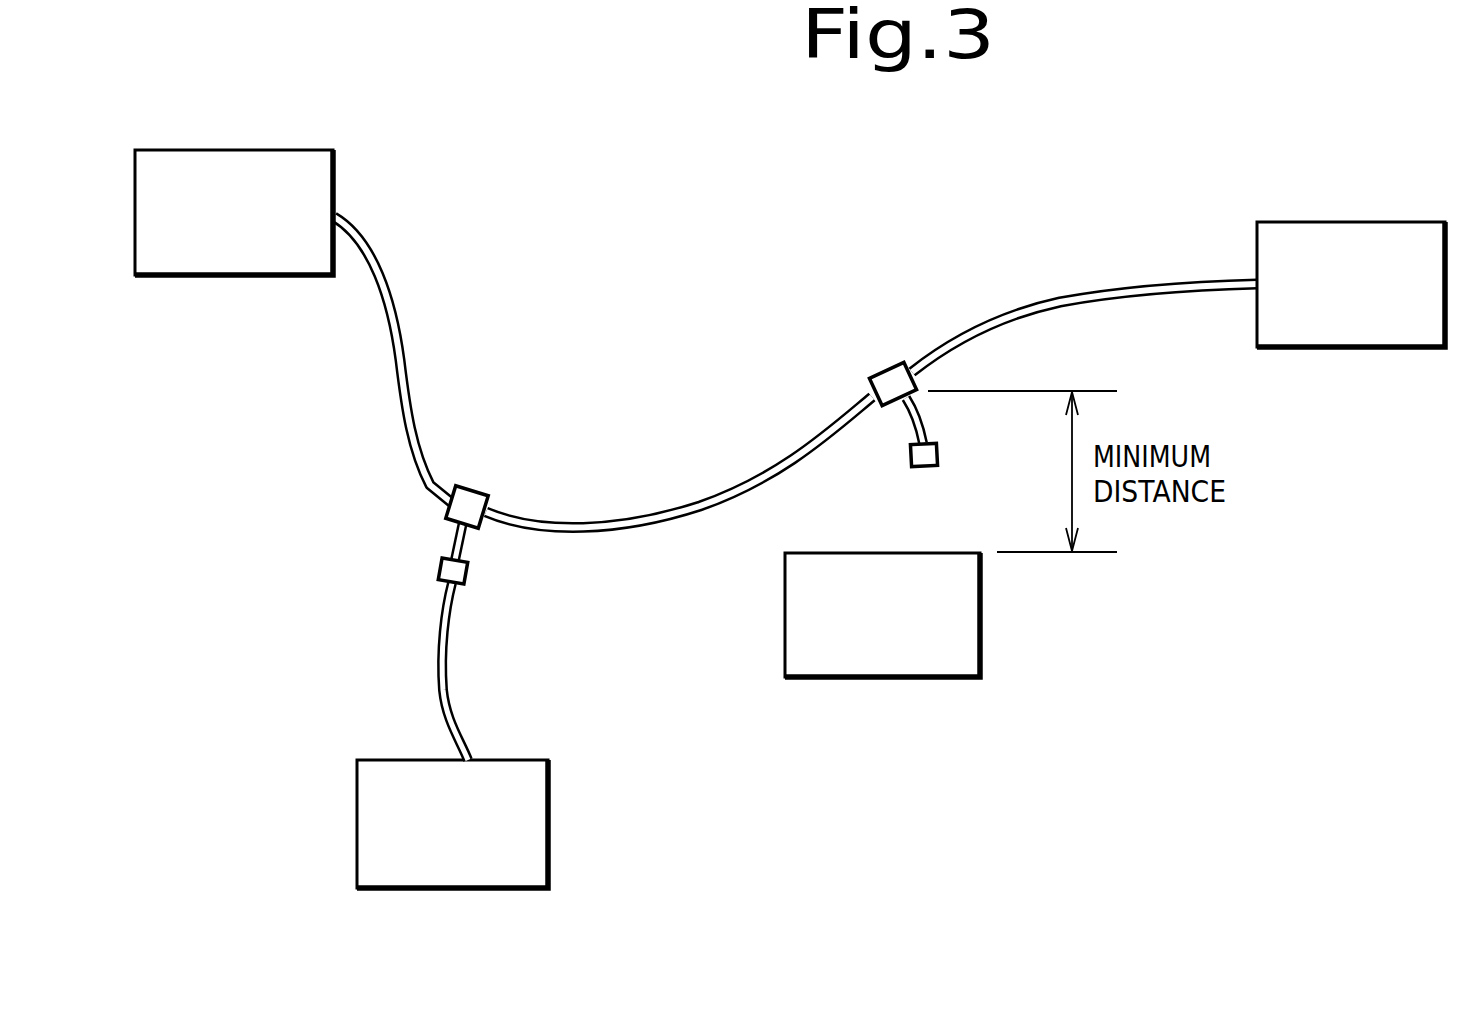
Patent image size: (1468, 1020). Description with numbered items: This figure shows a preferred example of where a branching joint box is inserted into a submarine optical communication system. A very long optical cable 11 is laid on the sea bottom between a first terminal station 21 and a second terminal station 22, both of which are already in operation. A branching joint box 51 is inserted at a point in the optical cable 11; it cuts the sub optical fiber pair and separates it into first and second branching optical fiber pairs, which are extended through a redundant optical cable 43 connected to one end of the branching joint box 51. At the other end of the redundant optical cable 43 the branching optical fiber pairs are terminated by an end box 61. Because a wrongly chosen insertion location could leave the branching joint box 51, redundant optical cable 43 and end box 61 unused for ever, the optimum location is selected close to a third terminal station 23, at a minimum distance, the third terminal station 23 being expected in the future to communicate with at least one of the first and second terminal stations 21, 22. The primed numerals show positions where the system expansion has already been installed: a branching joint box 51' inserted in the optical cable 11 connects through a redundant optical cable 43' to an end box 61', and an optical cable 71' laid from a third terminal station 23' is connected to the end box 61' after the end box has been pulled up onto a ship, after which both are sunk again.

The optical cable 11 is at (414, 371).
The first terminal station 21 is at (258, 148).
The second terminal station 22 is at (1303, 222).
The third terminal station 23 is at (882, 644).
The third terminal station 23' is at (495, 823).
The redundant optical cable 43 is at (883, 439).
The redundant optical cable 43' is at (406, 533).
The branching joint box 51 is at (883, 345).
The branching joint box 51' is at (492, 464).
The end box 61 is at (901, 486).
The end box 61' is at (485, 599).
The optical cable 71' is at (405, 671).